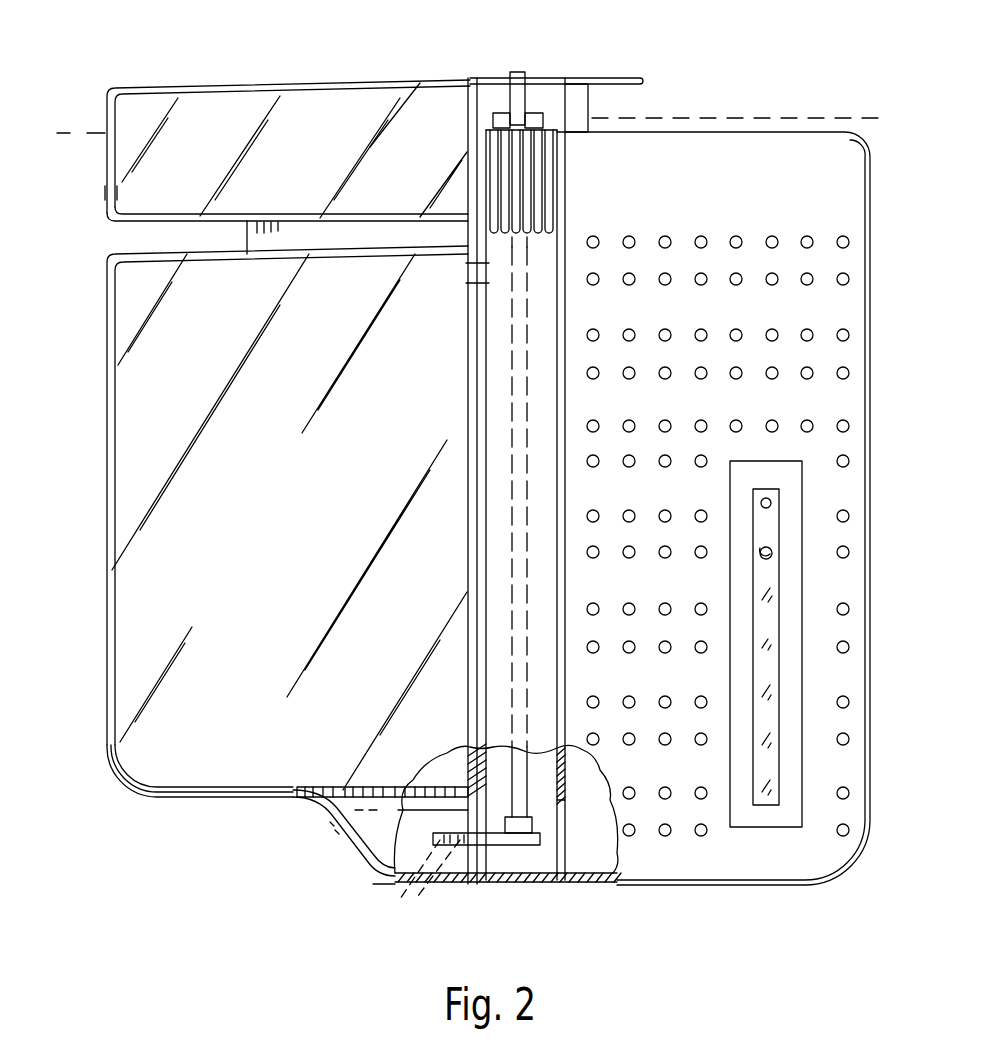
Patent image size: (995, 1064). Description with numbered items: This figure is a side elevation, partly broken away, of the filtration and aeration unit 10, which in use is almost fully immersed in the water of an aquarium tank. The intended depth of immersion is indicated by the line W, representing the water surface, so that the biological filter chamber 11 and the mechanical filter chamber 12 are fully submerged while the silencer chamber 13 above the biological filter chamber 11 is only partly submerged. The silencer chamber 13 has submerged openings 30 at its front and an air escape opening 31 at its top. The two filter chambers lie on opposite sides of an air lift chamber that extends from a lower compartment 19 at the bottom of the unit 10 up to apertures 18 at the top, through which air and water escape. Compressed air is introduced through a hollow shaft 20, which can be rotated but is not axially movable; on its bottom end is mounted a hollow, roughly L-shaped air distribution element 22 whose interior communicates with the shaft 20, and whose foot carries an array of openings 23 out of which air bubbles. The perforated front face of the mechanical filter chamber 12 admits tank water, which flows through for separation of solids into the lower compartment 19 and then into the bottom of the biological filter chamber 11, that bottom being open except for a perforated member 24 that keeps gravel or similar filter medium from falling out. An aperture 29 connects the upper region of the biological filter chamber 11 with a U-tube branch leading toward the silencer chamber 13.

The filtration and aeration unit 10 is at (150, 838).
The biological filter chamber 11 is at (137, 487).
The mechanical filter chamber 12 is at (812, 358).
The silencer chamber 13 is at (220, 108).
The apertures 18 is at (547, 162).
The lower compartment 19 is at (338, 862).
The hollow shaft 20 is at (515, 432).
The air distribution element 22 is at (490, 846).
The openings 23 is at (413, 887).
The perforated member 24 is at (366, 788).
The aperture 29 is at (470, 276).
The submerged openings 30 is at (106, 192).
The air escape opening 31 is at (430, 78).
The water surface line W is at (783, 117).